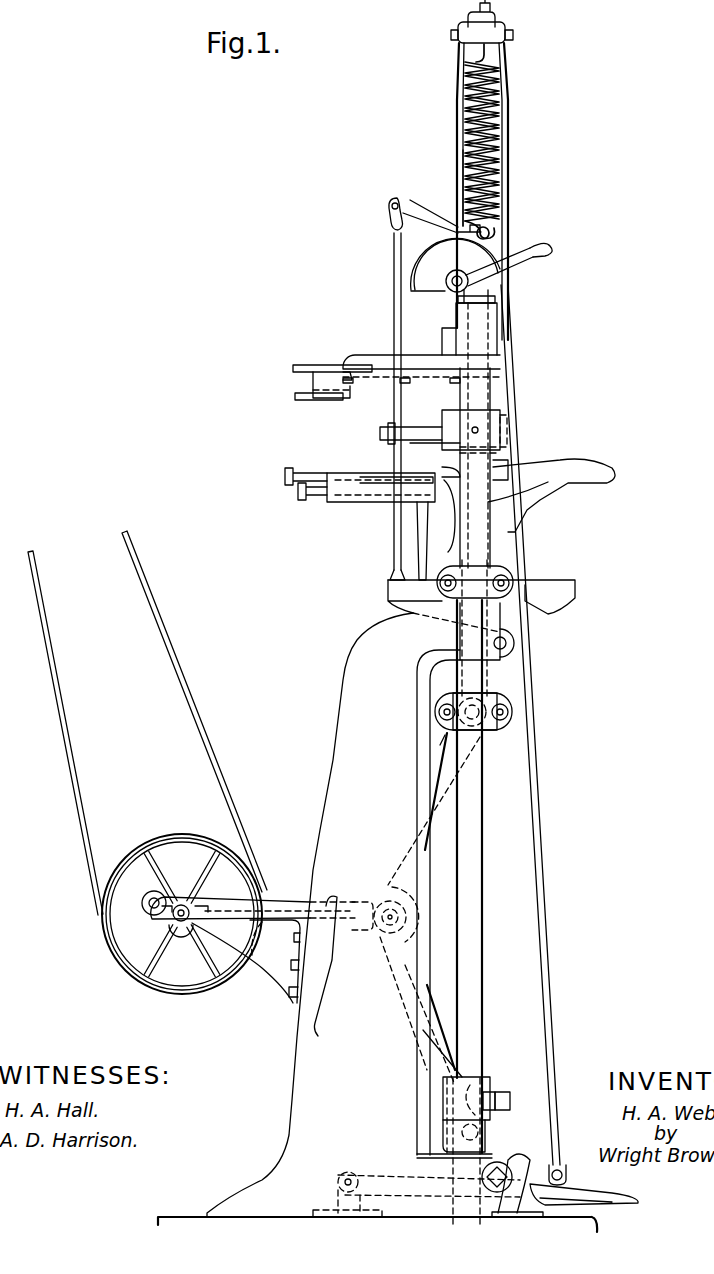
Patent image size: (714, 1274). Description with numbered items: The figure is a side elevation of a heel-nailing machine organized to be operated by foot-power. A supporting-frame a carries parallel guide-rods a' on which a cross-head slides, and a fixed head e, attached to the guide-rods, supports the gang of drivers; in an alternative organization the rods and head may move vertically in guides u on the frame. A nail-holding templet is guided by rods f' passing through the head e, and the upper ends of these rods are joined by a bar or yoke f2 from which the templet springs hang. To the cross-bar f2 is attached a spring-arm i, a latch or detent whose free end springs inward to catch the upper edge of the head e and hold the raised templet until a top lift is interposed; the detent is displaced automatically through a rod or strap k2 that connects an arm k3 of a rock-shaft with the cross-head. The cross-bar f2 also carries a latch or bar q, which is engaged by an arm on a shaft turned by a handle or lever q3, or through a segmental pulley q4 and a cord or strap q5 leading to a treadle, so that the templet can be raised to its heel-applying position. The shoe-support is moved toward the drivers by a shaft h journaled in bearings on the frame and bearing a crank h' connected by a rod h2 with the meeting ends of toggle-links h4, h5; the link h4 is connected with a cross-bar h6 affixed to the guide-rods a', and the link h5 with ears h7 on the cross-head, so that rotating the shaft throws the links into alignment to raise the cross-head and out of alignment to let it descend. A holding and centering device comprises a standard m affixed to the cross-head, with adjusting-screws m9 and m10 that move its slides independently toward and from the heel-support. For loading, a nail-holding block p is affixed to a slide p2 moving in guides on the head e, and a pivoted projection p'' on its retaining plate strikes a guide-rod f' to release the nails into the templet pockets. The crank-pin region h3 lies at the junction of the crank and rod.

The spring-arm i is at (508, 180).
The bar or yoke f2 is at (493, 35).
The templet-guiding rods f' is at (509, 141).
The latch or bar q is at (457, 175).
The arm k3 is at (418, 218).
The segmental pulley q4 is at (455, 265).
The handle or lever q3 is at (526, 259).
The head e is at (492, 294).
The guide-rods a' is at (513, 765).
The rod or strap k2 is at (397, 325).
The slide p2 is at (310, 365).
The nail-holding block p is at (314, 382).
The plate piece p'' is at (354, 398).
The adjusting-screw m9 is at (313, 500).
The standard m is at (437, 542).
The adjusting-screw m10 is at (310, 473).
The cord or strap q5 is at (517, 443).
The guides u is at (514, 642).
The ears h7 is at (512, 712).
The supporting-frame a is at (377, 922).
The shaft h is at (403, 745).
The crank h' is at (169, 762).
The rod h2 is at (262, 905).
The crank h3 is at (411, 911).
The toggle-link h4 is at (430, 1015).
The toggle-link h5 is at (433, 815).
The cross-bar h6 is at (492, 1085).